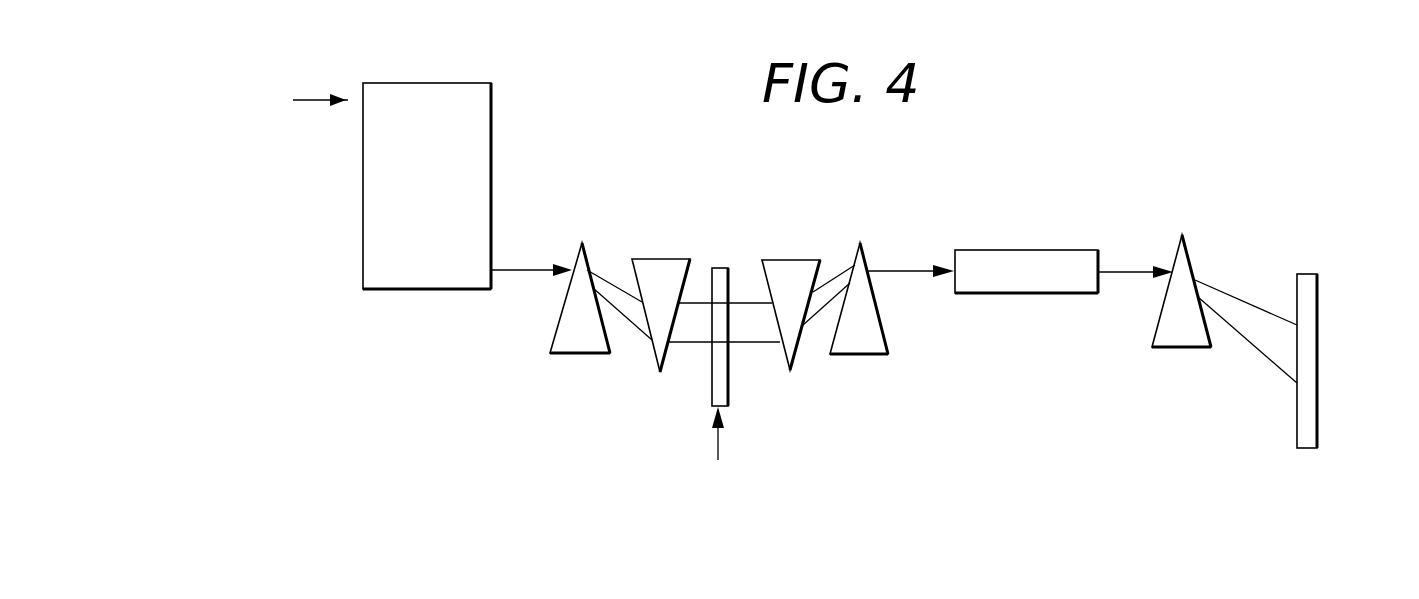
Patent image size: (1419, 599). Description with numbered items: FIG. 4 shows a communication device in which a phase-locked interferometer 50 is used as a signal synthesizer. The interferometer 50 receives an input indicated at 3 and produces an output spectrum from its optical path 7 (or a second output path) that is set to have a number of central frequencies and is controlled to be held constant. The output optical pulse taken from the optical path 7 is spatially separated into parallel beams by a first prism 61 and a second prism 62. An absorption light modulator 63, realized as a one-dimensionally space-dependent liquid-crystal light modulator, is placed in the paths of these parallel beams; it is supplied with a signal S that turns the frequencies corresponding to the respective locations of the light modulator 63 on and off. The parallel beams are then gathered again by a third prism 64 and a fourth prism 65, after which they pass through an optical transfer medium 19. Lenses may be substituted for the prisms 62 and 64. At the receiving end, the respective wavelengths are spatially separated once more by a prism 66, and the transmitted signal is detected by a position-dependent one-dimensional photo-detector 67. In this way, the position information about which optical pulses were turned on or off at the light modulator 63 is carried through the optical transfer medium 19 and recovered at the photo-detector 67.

The input light beam 3 is at (310, 100).
The phase-locked interferometer 50 is at (476, 83).
The optical path 7 is at (523, 270).
The prism 61 is at (577, 356).
The prism 62 is at (672, 259).
The absorption light modulator 63 is at (730, 397).
The prism 64 is at (797, 260).
The prism 65 is at (862, 358).
The optical transfer medium 19 is at (1085, 250).
The prism 66 is at (1182, 350).
The position-dependent one-dimensional photo-detector 67 is at (1313, 274).